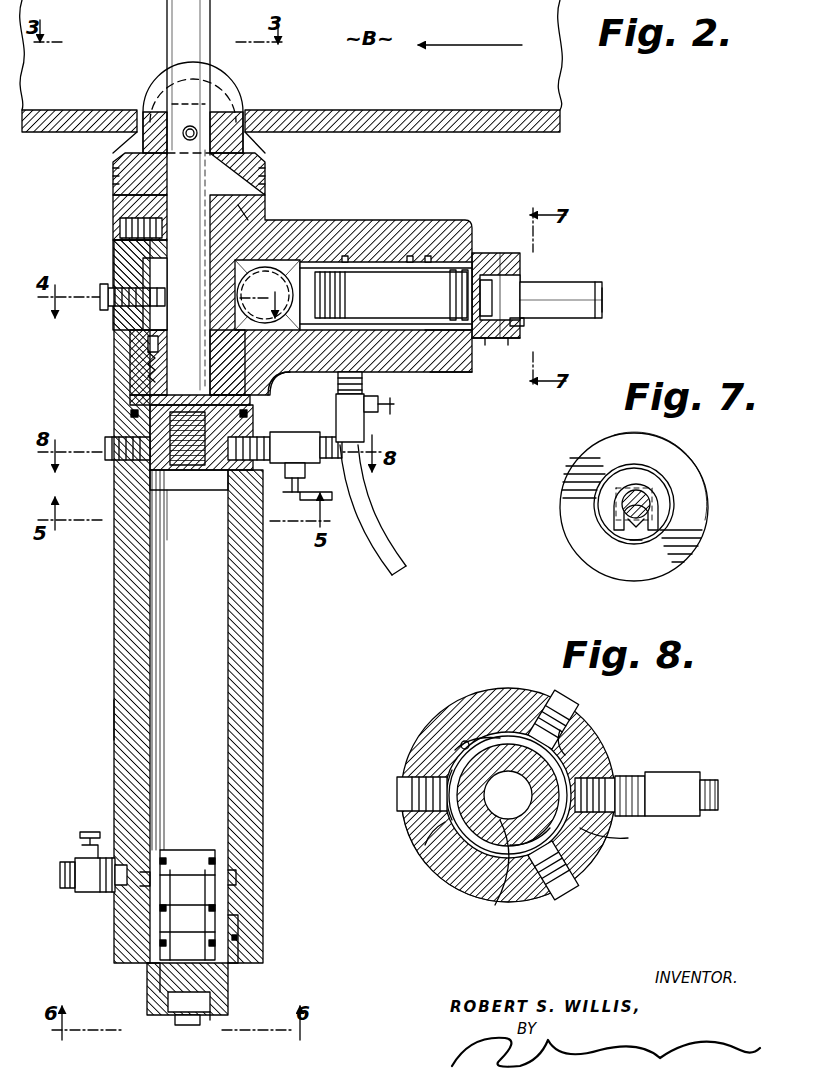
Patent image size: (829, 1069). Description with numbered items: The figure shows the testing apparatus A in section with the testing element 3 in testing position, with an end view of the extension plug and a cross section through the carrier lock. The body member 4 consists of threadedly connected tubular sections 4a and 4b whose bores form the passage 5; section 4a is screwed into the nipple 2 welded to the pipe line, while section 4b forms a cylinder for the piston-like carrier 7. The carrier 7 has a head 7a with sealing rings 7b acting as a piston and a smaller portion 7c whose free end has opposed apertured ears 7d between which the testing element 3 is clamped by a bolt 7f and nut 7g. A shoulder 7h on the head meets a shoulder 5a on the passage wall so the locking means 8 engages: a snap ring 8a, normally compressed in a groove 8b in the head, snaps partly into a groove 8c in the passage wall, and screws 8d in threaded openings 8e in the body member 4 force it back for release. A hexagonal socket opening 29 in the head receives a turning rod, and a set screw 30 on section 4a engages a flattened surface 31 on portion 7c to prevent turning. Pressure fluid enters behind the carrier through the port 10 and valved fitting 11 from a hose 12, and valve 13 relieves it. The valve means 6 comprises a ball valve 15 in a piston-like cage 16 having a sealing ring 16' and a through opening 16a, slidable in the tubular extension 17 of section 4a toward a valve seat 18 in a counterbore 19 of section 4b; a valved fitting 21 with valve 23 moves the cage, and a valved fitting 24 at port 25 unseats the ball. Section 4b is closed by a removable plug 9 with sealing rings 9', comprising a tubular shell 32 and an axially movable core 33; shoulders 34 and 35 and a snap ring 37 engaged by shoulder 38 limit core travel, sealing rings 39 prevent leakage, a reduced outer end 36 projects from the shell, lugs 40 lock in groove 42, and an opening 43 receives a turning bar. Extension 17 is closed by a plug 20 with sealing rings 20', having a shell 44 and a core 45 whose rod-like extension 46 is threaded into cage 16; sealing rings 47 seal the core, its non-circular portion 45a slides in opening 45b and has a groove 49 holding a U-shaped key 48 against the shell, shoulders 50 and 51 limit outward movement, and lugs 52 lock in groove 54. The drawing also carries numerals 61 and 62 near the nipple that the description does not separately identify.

In FIG. 2, the nipple 2 is at (113, 170).
In FIG. 2, the testing element 3 is at (214, 36).
In FIG. 2, the body member 4 is at (112, 666).
In FIG. 8, the body member 4 is at (468, 690).
In FIG. 2, the tubular section 4a is at (113, 248).
In FIG. 2, the tubular section 4b is at (114, 711).
In FIG. 8, the tubular section 4b is at (507, 688).
In FIG. 2, the passage 5 is at (230, 622).
In FIG. 2, the shoulder 5a is at (140, 392).
In FIG. 2, the valve means 6 is at (298, 258).
In FIG. 2, the carrier 7 is at (166, 202).
In FIG. 8, the carrier 7 is at (553, 790).
In FIG. 2, the head 7a is at (222, 488).
In FIG. 8, the head 7a is at (596, 842).
In FIG. 2, the sealing rings 7b is at (150, 477).
In FIG. 2, the carrier portion 7c is at (194, 184).
In FIG. 2, the apertured ears 7d is at (192, 118).
In FIG. 2, the bolt 7f is at (198, 129).
In FIG. 2, the nut 7g is at (166, 102).
In FIG. 2, the shoulder 7h is at (270, 380).
In FIG. 2, the locking means 8 is at (149, 462).
In FIG. 8, the locking means 8 is at (450, 832).
In FIG. 2, the snap ring 8a is at (130, 414).
In FIG. 8, the snap ring 8a is at (455, 720).
In FIG. 8, the groove 8b is at (455, 770).
In FIG. 2, the groove 8c is at (286, 496).
In FIG. 8, the groove 8c is at (461, 748).
In FIG. 2, the screws 8d is at (112, 445).
In FIG. 8, the screws 8d is at (397, 795).
In FIG. 8, the threaded openings 8e is at (440, 821).
In FIG. 2, the removable plug 9 is at (215, 989).
In FIG. 2, the sealing rings 9' is at (260, 874).
In FIG. 2, the port 10 is at (144, 886).
In FIG. 2, the valved fitting 11 is at (70, 876).
In FIG. 2, the hose 12 is at (388, 516).
In FIG. 2, the valve 13 is at (90, 886).
In FIG. 2, the ball valve 15 is at (268, 268).
In FIG. 2, the piston-like cage 16 is at (353, 254).
In FIG. 2, the sealing ring 16' is at (334, 234).
In FIG. 2, the through opening 16a is at (345, 392).
In FIG. 2, the tubular extension 17 is at (372, 222).
In FIG. 7, the tubular extension 17 is at (706, 460).
In FIG. 2, the valve seat 18 is at (148, 346).
In FIG. 2, the counterbore 19 is at (148, 362).
In FIG. 2, the removable plug 20 is at (490, 260).
In FIG. 7, the removable plug 20 is at (673, 504).
In FIG. 2, the sealing rings 20' is at (415, 216).
In FIG. 2, the valved fitting 21 is at (378, 412).
In FIG. 2, the valve 23 is at (345, 396).
In FIG. 2, the valved fitting 24 is at (285, 442).
In FIG. 8, the valved fitting 24 is at (662, 774).
In FIG. 8, the port 25 is at (585, 824).
In FIG. 2, the socket opening 29 is at (192, 478).
In FIG. 8, the socket opening 29 is at (496, 905).
In FIG. 2, the set screw 30 is at (106, 288).
In FIG. 2, the flattened surfaces 31 is at (143, 302).
In FIG. 2, the tubular shell 32 is at (226, 982).
In FIG. 2, the core 33 is at (183, 864).
In FIG. 2, the shoulder 34 is at (212, 1020).
In FIG. 2, the shoulder 35 is at (168, 1005).
In FIG. 2, the reduced outer end 36 is at (182, 1022).
In FIG. 2, the snap ring 37 is at (216, 862).
In FIG. 2, the shoulder 38 is at (216, 908).
In FIG. 2, the sealing rings 39 is at (160, 935).
In FIG. 2, the lugs 40 is at (238, 926).
In FIG. 2, the groove 42 is at (237, 940).
In FIG. 2, the opening 43 is at (160, 990).
In FIG. 2, the tubular shell 44 is at (500, 340).
In FIG. 7, the tubular shell 44 is at (646, 542).
In FIG. 2, the movable core 45 is at (604, 296).
In FIG. 7, the movable core 45 is at (622, 506).
In FIG. 2, the core portion 45a is at (582, 282).
In FIG. 2, the opening 45b is at (507, 278).
In FIG. 2, the rod-like extension 46 is at (386, 274).
In FIG. 2, the sealing rings 47 is at (468, 272).
In FIG. 2, the U-shaped key 48 is at (521, 275).
In FIG. 7, the U-shaped key 48 is at (652, 492).
In FIG. 2, the groove 49 is at (524, 322).
In FIG. 7, the groove 49 is at (636, 524).
In FIG. 2, the shoulder 50 is at (485, 340).
In FIG. 2, the shoulder 51 is at (514, 339).
In FIG. 2, the lugs 52 is at (428, 258).
In FIG. 2, the groove 54 is at (436, 372).
In FIG. 2, the body thread 61 is at (248, 222).
In FIG. 2, the lock nut thread 62 is at (120, 228).
In FIG. 2, the testing apparatus A is at (112, 627).